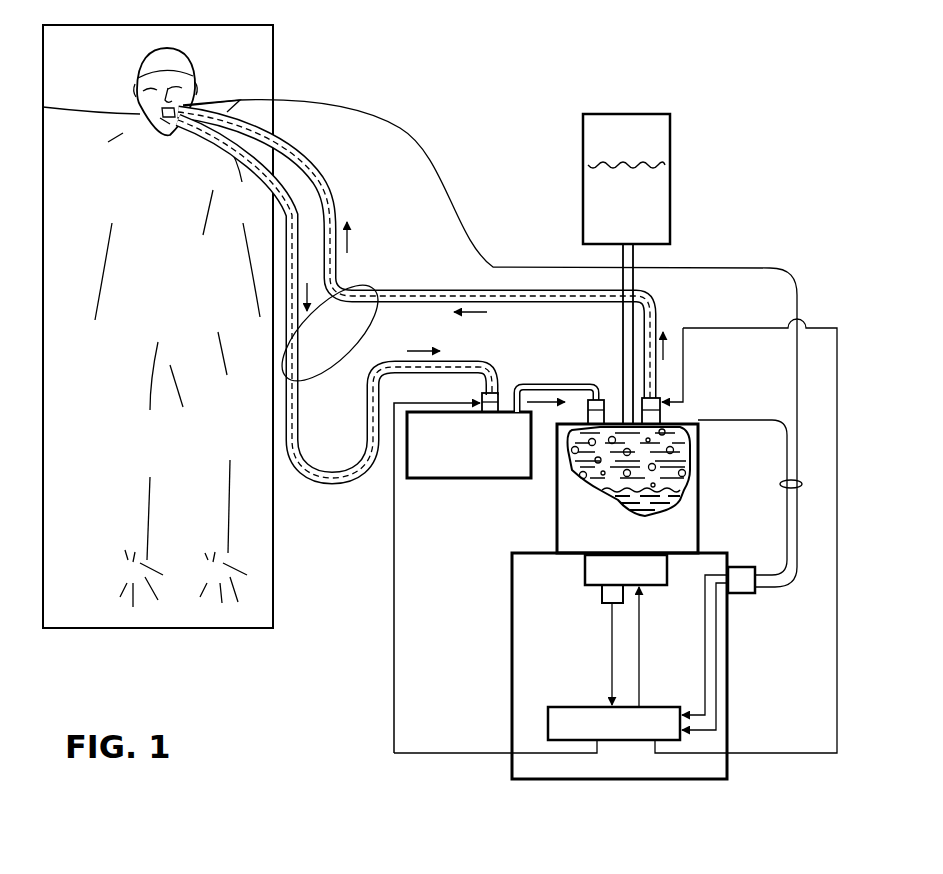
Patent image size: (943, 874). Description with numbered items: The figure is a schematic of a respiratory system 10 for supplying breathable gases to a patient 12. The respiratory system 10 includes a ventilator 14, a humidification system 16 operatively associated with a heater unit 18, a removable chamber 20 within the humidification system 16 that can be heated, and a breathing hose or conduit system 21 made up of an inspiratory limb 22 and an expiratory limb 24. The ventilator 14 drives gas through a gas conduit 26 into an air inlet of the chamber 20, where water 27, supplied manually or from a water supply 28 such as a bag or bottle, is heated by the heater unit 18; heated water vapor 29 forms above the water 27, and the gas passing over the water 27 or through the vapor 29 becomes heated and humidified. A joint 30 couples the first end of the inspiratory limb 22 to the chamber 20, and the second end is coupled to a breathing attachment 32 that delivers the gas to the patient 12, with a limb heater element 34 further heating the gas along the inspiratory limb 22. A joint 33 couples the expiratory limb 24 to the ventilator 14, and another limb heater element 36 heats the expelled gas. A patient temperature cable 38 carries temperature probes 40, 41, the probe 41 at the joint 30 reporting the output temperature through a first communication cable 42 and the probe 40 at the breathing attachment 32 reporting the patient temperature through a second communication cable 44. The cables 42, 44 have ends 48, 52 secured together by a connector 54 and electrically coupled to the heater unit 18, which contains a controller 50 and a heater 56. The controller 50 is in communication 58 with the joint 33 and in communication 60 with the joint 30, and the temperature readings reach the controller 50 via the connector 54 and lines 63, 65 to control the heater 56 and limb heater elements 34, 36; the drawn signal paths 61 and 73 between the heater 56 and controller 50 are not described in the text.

The respiratory system 10 is at (772, 116).
The patient 12 is at (192, 65).
The ventilator 14 is at (490, 480).
The humidification system 16 is at (704, 470).
The heater unit 18 is at (509, 660).
The removable chamber 20 is at (602, 537).
The breathing hose or conduit system 21 is at (358, 336).
The inspiratory limb 22 is at (338, 211).
The expiratory limb 24 is at (289, 408).
The gas conduit 26 is at (556, 384).
The water 27 is at (680, 498).
The water supply 28 is at (670, 202).
The heated water vapor 29 is at (612, 436).
The joint 30 is at (662, 402).
The breathing attachment 32 is at (150, 110).
The joint 33 is at (481, 398).
The limb heater element 34 is at (392, 289).
The limb heater element 36 is at (322, 482).
The patient temperature cable 38 is at (803, 484).
The temperature probe 40 is at (160, 130).
The temperature probe 41 is at (664, 412).
The first communication cable 42 is at (758, 393).
The second communication cable 44 is at (497, 265).
The end 48 is at (773, 577).
The controller 50 is at (548, 723).
The end 52 is at (767, 590).
The connector 54 is at (737, 594).
The heater 56 is at (585, 567).
The communication 58 is at (437, 752).
The communication 60 is at (770, 754).
The heater control signal 61 is at (612, 637).
The line 63 is at (716, 667).
The line 65 is at (705, 687).
The heater feedback signal 73 is at (643, 638).